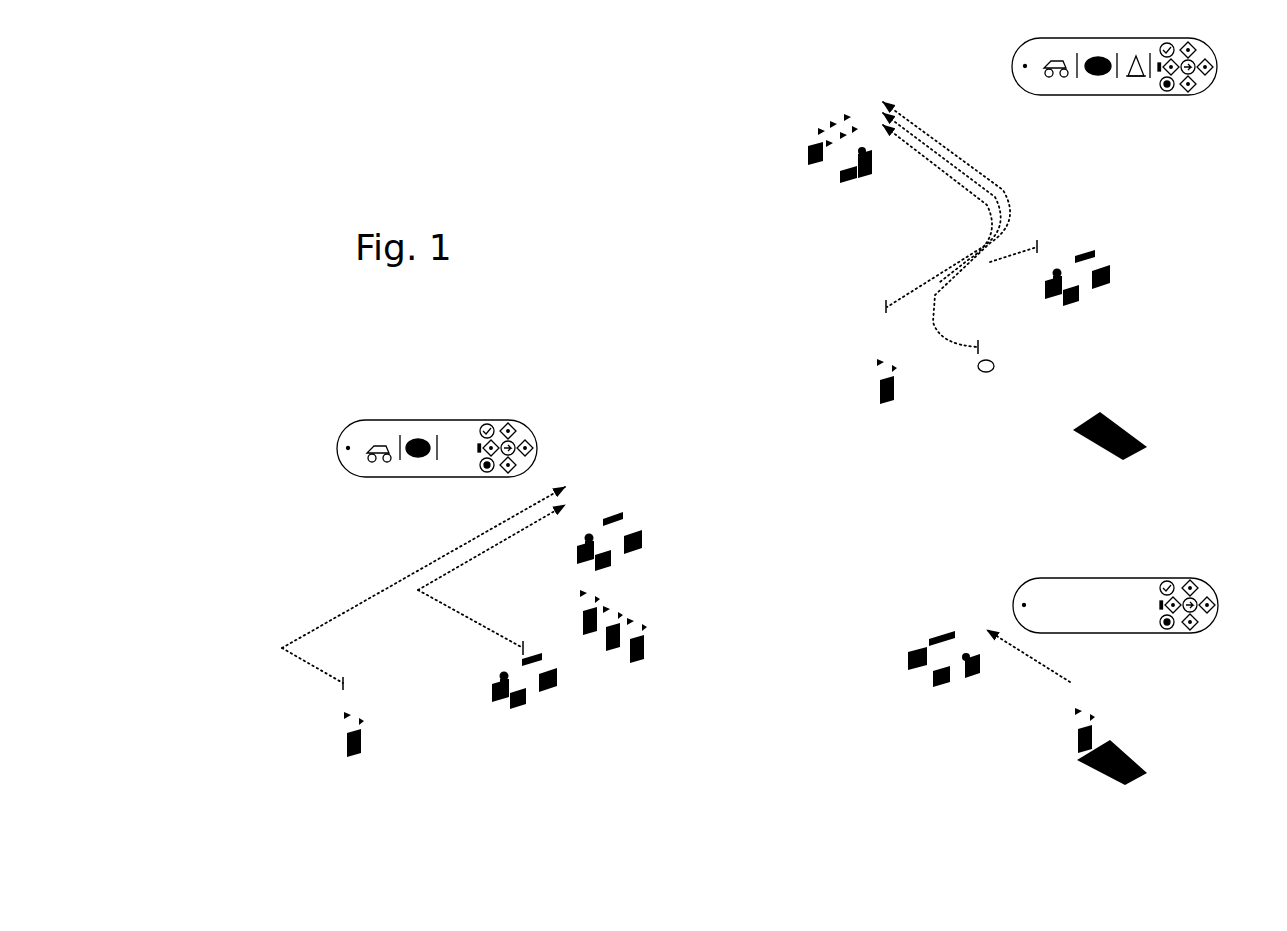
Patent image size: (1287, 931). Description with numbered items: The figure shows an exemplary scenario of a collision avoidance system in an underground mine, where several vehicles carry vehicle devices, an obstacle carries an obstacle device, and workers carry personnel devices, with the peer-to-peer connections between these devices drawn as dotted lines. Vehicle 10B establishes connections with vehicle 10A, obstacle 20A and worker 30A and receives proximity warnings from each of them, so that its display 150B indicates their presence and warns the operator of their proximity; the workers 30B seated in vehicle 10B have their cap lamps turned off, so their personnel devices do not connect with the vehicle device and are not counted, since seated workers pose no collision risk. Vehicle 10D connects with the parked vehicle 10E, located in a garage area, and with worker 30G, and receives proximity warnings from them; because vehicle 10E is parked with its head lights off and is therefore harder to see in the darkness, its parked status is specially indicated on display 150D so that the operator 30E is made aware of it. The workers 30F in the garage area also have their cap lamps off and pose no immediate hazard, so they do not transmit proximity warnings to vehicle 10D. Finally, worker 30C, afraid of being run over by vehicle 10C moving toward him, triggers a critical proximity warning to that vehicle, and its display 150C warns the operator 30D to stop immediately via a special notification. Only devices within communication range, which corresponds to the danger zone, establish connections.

The vehicle 10A is at (1090, 302).
The vehicle 10B is at (848, 188).
The vehicle 10C is at (932, 682).
The vehicle 10D is at (643, 512).
The parked vehicle 10E is at (530, 713).
The obstacle 20A is at (990, 384).
The worker 30A is at (898, 410).
The workers 30B is at (815, 127).
The worker 30C is at (1102, 702).
The operator 30D is at (943, 628).
The operator 30E is at (613, 503).
The workers 30F is at (641, 603).
The worker 30G is at (360, 763).
The display 150B is at (1010, 53).
The display 150C is at (1195, 577).
The display 150D is at (508, 418).